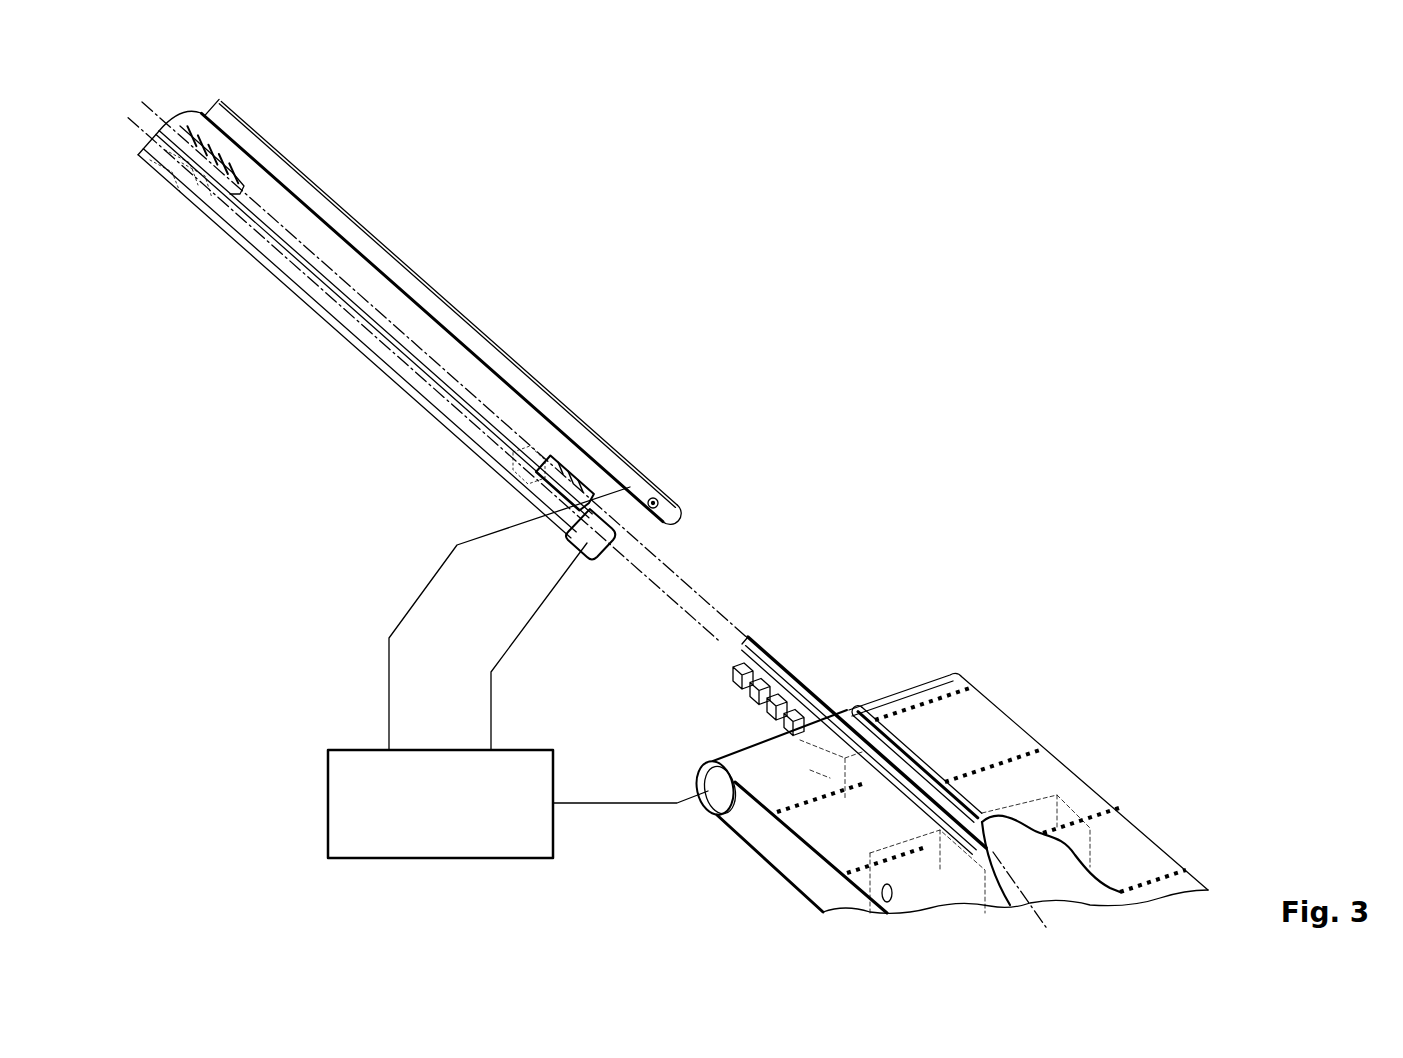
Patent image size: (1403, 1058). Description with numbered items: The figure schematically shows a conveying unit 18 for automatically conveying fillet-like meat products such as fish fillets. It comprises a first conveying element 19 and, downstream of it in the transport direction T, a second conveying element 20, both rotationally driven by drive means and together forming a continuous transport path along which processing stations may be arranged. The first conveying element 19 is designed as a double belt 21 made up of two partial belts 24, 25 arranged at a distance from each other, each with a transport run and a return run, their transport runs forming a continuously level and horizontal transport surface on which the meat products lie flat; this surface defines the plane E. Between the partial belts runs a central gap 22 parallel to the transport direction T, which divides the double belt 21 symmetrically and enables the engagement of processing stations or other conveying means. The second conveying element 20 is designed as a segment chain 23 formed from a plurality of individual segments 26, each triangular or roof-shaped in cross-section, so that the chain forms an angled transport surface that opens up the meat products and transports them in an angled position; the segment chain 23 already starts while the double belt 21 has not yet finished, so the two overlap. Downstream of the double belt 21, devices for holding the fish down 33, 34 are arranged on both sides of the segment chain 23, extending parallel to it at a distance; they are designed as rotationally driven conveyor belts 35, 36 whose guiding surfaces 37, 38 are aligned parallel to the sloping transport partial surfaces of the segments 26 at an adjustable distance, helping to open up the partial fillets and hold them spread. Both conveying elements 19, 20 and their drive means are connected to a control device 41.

The conveying unit 18 is at (1220, 617).
The first conveying element 19 is at (1139, 786).
The second conveying element 20 is at (806, 648).
The double belt 21 is at (1088, 782).
The gap 22 is at (862, 713).
The segment chain 23 is at (720, 670).
The partial belt 24 is at (818, 837).
The partial belt 25 is at (1025, 745).
The segment 26 is at (220, 172).
The device for holding the fish down 33 is at (464, 460).
The device for holding the fish down 34 is at (630, 429).
The conveyor belt 35 is at (447, 405).
The conveyor belt 36 is at (528, 378).
The guiding surface 37 is at (593, 545).
The guiding surface 38 is at (672, 510).
The control device 41 is at (328, 803).
The transport direction T is at (1005, 562).
The plane E is at (940, 758).